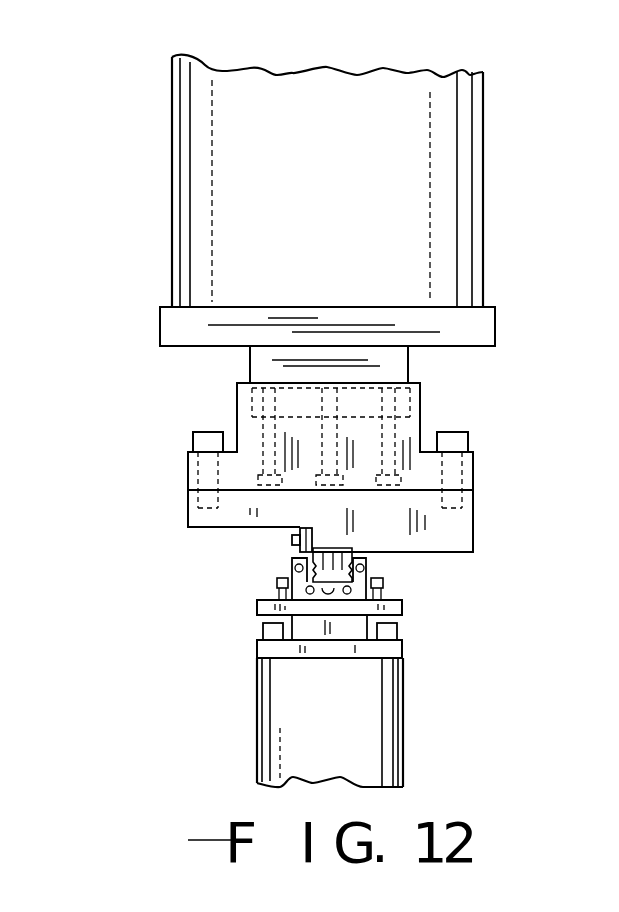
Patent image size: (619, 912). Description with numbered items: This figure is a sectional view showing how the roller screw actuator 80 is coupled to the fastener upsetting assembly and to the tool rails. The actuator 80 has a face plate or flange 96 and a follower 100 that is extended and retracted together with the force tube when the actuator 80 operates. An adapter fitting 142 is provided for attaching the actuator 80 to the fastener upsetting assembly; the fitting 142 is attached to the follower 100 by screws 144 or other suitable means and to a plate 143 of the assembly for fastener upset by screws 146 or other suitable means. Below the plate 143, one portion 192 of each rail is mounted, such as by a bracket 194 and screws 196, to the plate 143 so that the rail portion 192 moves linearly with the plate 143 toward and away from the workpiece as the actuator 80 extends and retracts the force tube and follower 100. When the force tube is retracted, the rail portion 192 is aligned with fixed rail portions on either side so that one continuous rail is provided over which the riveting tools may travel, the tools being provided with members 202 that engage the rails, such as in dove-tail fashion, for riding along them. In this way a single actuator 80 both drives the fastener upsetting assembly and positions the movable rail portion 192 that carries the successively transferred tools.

The roller screw actuator 80 is at (172, 155).
The face plate or flange 96 is at (497, 318).
The follower 100 is at (410, 365).
The adapter fitting 142 is at (475, 470).
The plate 143 is at (475, 518).
The screws 144 is at (255, 482).
The screws 146 is at (190, 430).
The rail portion 192 is at (353, 545).
The bracket 194 is at (290, 556).
The screws 196 is at (290, 545).
The members 202 is at (270, 590).